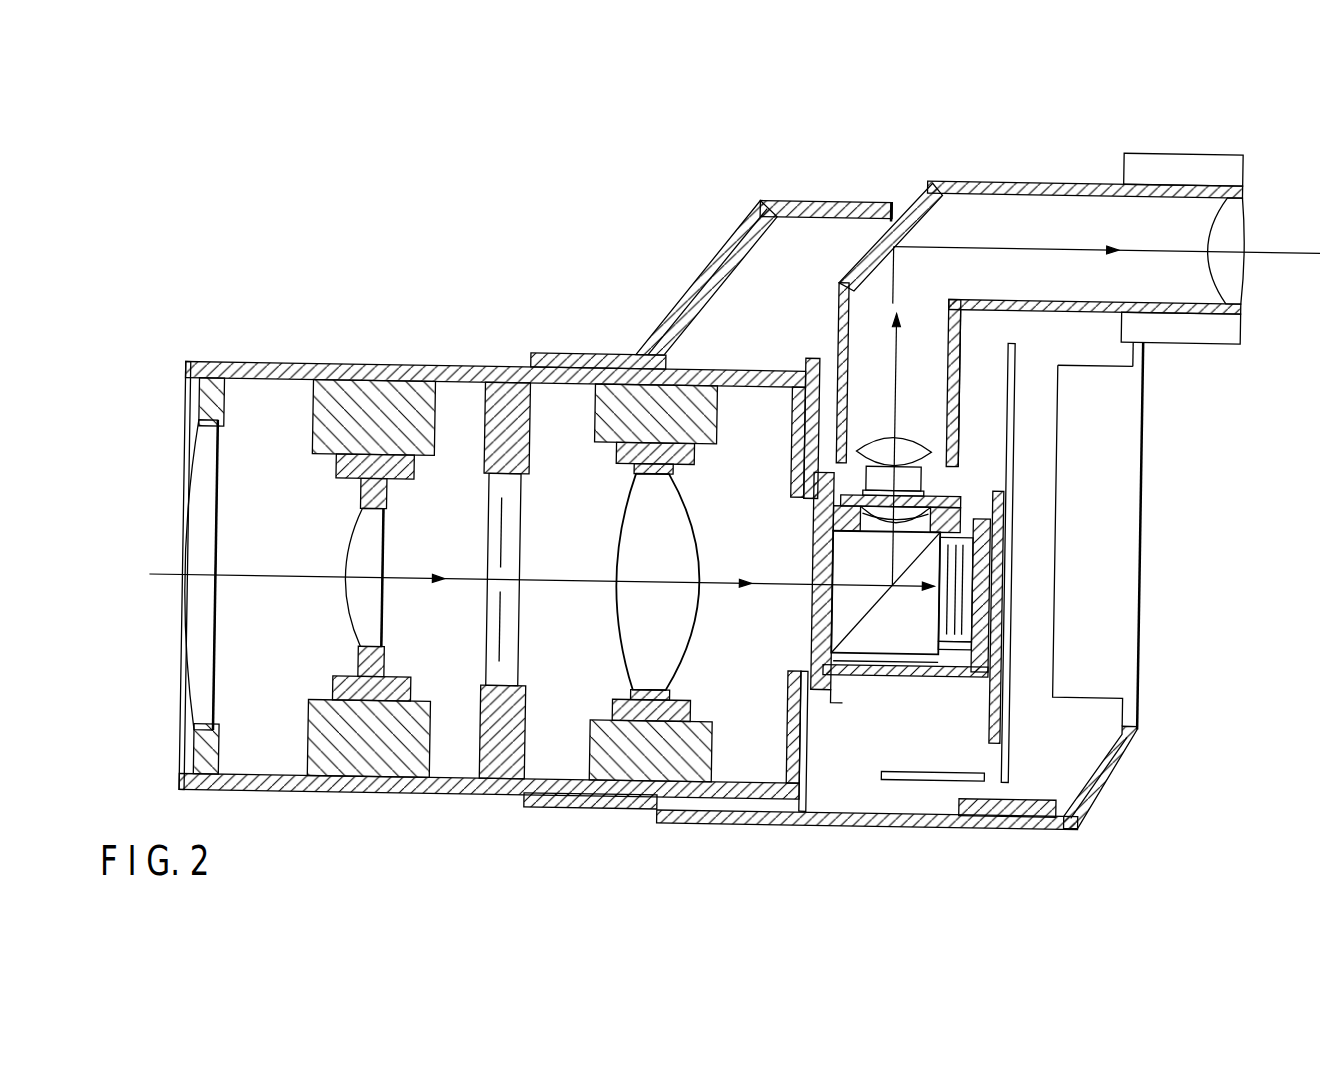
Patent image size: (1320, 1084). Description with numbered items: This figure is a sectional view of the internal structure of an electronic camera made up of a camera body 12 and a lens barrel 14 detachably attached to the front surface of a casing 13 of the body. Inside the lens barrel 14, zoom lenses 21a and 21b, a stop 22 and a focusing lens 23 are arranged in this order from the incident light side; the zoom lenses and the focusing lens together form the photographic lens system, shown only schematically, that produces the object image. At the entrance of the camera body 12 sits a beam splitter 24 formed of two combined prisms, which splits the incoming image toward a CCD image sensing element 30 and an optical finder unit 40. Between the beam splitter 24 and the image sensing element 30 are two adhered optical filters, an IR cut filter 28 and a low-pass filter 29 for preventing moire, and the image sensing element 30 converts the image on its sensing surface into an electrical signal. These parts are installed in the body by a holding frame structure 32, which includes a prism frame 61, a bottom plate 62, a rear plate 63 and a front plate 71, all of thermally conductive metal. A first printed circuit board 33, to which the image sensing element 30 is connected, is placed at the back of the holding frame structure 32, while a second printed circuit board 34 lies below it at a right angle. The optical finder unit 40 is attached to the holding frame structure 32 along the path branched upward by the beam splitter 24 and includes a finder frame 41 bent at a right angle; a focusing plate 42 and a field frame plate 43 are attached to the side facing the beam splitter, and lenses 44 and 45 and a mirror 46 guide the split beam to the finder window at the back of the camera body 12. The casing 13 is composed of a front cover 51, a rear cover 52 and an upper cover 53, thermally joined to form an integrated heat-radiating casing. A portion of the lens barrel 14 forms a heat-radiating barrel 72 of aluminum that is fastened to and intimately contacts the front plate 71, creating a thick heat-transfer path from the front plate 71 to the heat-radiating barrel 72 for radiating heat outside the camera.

The camera body 12 is at (1148, 712).
The casing 13 is at (820, 199).
The lens barrel 14 is at (295, 369).
The zoom lens 21a is at (212, 527).
The zoom lens 21b is at (371, 554).
The stop 22 is at (513, 527).
The focusing lens 23 is at (680, 528).
The beam splitter 24 is at (831, 598).
The optical filter 28 is at (948, 609).
The optical filter 29 is at (968, 645).
The CCD image sensing element 30 is at (985, 606).
The holding frame structure 32 is at (811, 578).
The first printed circuit board 33 is at (1014, 405).
The second printed circuit board 34 is at (932, 777).
The optical finder unit 40 is at (1012, 177).
The finder frame 41 is at (952, 177).
The focusing plate 42 is at (845, 525).
The field frame plate 43 is at (960, 480).
The lens 44 is at (913, 433).
The lens 45 is at (1232, 258).
The mirror 46 is at (922, 196).
The front cover 51 is at (789, 824).
The rear cover 52 is at (1103, 787).
The upper cover 53 is at (716, 258).
The prism frame 61 is at (813, 648).
The bottom plate 62 is at (893, 675).
The rear plate 63 is at (1012, 512).
The front plate 71 is at (810, 356).
The heat-radiating barrel 72 is at (446, 355).